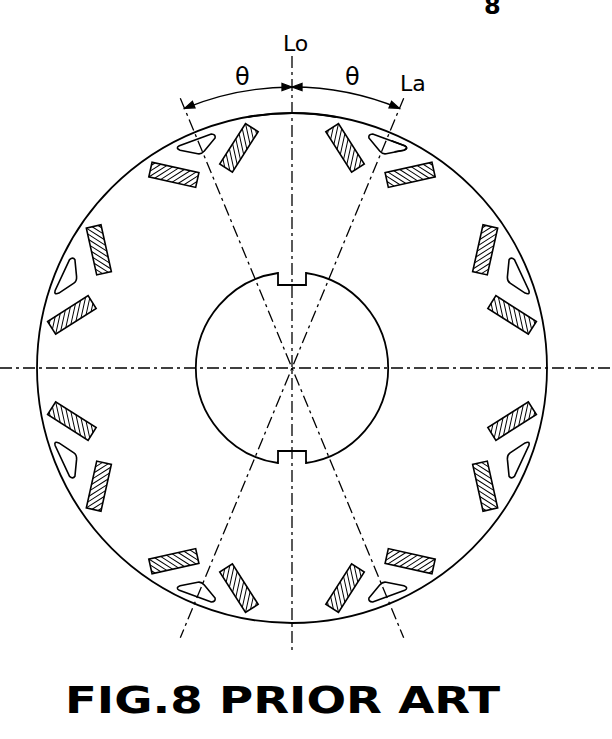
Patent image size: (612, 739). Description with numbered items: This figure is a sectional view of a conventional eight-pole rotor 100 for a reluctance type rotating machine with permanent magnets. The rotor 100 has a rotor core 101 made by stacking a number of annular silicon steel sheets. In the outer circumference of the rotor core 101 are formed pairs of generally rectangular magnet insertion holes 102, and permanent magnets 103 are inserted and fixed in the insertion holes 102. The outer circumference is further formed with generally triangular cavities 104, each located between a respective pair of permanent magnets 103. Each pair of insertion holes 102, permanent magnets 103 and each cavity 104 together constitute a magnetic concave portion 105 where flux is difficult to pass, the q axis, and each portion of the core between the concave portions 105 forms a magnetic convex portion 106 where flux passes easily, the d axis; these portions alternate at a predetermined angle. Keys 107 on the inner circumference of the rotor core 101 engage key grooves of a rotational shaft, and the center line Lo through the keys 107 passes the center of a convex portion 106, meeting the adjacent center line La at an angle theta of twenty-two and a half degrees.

The rotor 100 is at (471, 167).
The rotor core 101 is at (452, 542).
The magnet insertion holes 102 is at (322, 156).
The permanent magnets 103 is at (346, 170).
The cavity 104 is at (396, 150).
The magnetic concave portion 105 is at (167, 158).
The magnetic convex portion 106 is at (305, 137).
The keys 107 is at (293, 284).